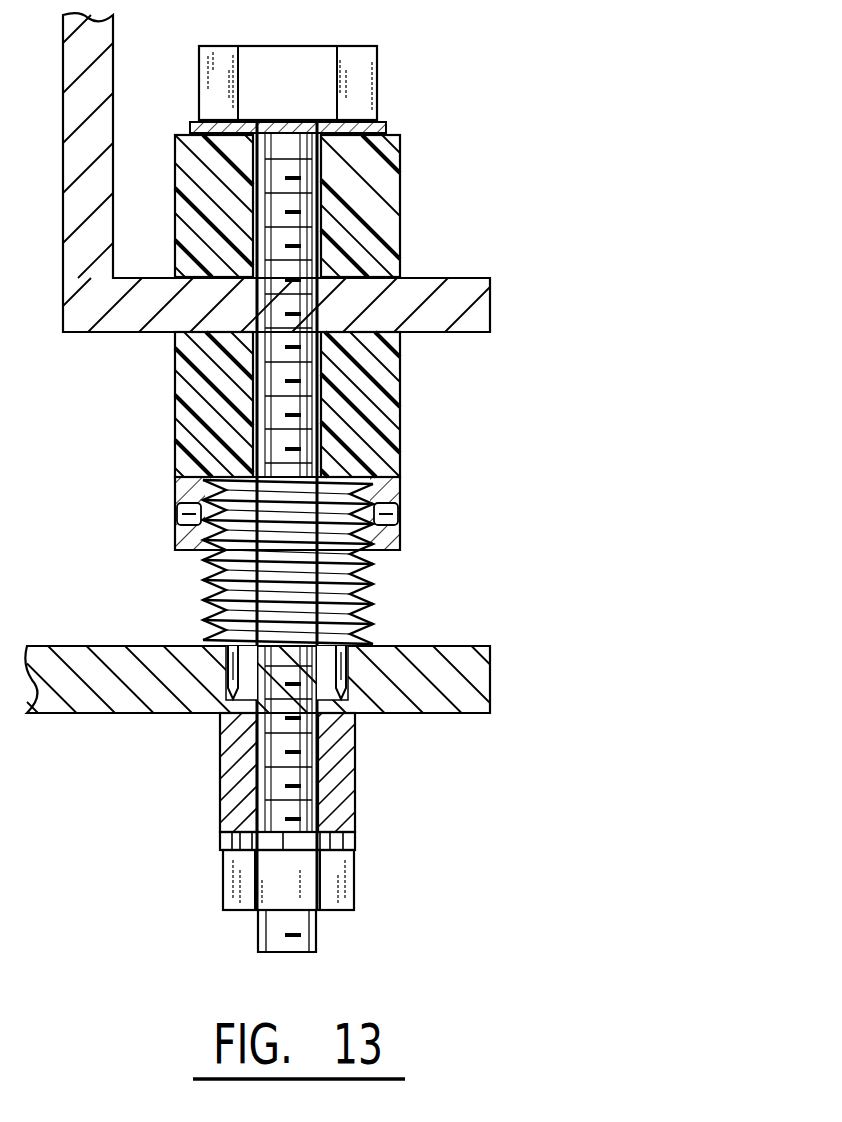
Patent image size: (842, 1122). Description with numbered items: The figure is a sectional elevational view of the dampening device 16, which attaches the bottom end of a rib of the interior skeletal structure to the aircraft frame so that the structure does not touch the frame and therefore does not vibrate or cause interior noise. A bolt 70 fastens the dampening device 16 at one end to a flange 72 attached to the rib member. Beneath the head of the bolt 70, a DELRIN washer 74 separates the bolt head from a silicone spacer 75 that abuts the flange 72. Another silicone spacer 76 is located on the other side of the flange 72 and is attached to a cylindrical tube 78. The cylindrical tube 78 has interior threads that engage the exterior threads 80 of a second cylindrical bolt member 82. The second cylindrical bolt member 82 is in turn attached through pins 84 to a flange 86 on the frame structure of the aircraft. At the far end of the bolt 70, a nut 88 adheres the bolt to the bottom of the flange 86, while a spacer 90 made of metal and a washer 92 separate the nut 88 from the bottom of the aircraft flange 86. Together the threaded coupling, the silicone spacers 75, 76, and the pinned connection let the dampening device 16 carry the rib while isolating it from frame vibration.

The dampening device 16 is at (572, 370).
The bolt 70 is at (377, 48).
The flange 72 is at (490, 288).
The DELRIN washer 74 is at (383, 126).
The silicone spacer 75 is at (400, 436).
The silicone spacer 76 is at (400, 201).
The cylindrical tube 78 is at (175, 541).
The exterior threads 80 is at (205, 600).
The second cylindrical bolt member 82 is at (432, 557).
The pins 84 is at (226, 703).
The flange 86 is at (490, 668).
The nut 88 is at (352, 881).
The spacer 90 is at (356, 787).
The washer 92 is at (357, 840).